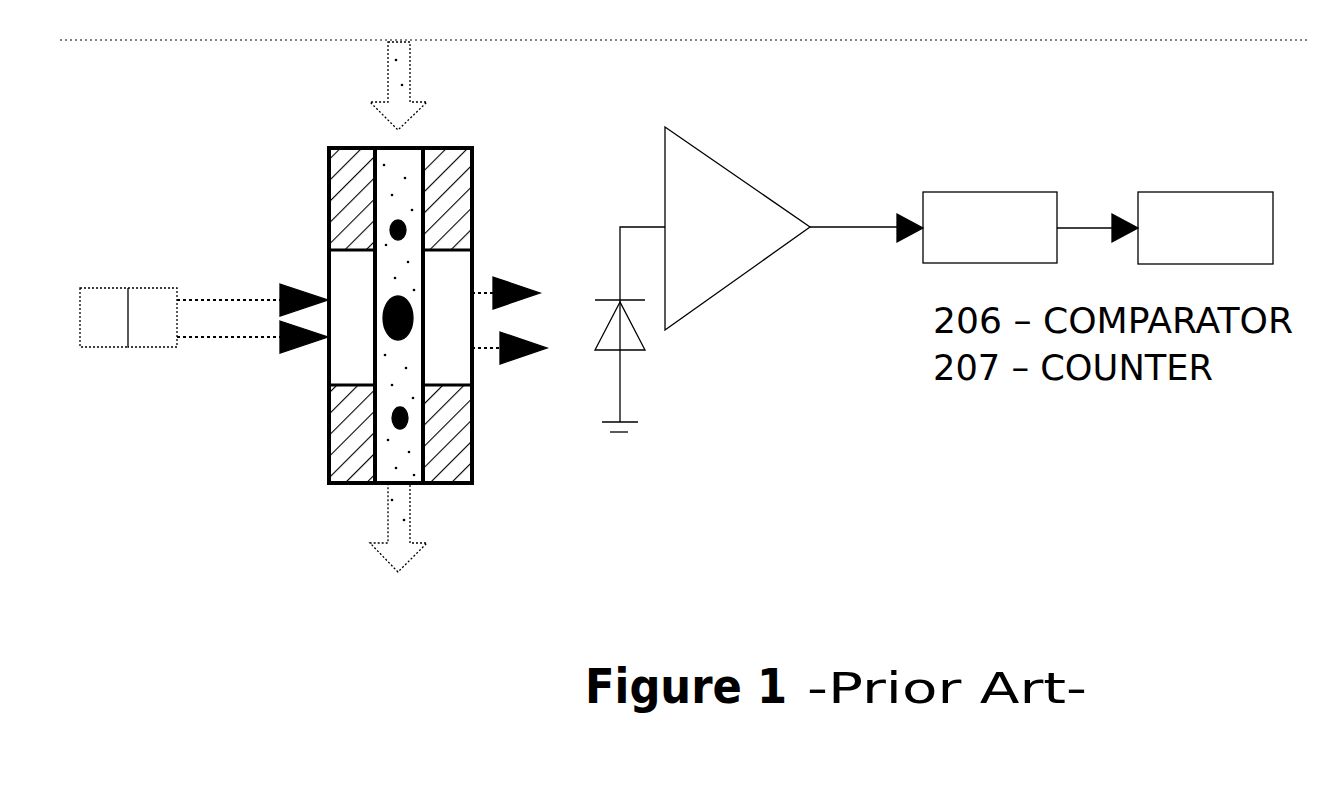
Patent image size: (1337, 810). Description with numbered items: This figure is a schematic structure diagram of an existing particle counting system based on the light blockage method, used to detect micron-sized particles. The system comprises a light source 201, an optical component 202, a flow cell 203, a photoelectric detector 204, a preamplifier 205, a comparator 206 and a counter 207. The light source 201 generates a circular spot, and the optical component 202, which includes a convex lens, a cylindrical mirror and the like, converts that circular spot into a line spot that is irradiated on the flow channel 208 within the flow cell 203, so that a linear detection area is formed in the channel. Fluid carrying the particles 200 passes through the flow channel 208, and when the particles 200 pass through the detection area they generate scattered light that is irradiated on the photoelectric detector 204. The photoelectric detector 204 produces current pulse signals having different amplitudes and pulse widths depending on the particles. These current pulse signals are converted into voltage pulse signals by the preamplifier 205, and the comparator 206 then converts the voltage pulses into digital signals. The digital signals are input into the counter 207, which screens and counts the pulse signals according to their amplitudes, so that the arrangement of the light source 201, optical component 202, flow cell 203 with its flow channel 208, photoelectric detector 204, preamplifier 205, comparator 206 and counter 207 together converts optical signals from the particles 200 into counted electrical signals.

The particles 200 is at (355, 278).
The light source 201 is at (108, 347).
The optical component 202 is at (148, 285).
The flow cell 203 is at (330, 477).
The photoelectric detector 204 is at (627, 313).
The preamplifier 205 is at (745, 180).
The comparator 206 is at (990, 192).
The counter 207 is at (1210, 195).
The flow channel 208 is at (330, 397).